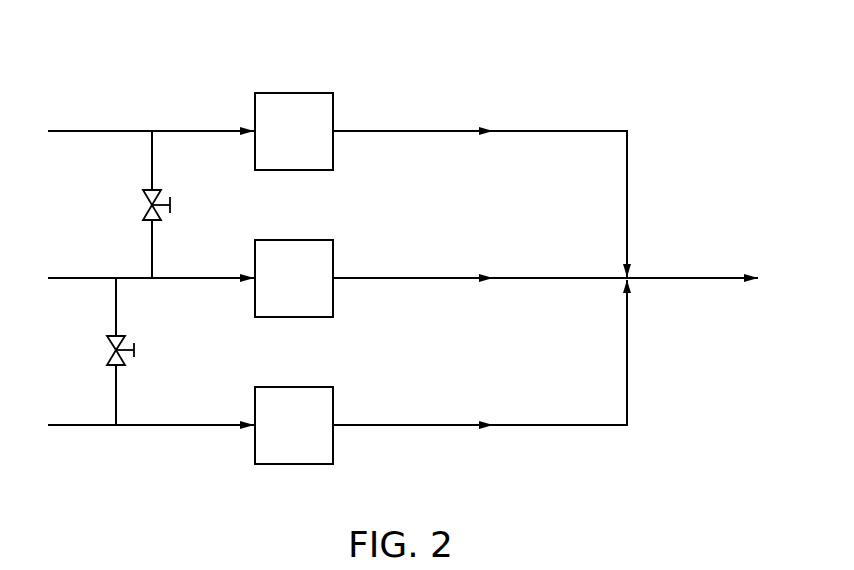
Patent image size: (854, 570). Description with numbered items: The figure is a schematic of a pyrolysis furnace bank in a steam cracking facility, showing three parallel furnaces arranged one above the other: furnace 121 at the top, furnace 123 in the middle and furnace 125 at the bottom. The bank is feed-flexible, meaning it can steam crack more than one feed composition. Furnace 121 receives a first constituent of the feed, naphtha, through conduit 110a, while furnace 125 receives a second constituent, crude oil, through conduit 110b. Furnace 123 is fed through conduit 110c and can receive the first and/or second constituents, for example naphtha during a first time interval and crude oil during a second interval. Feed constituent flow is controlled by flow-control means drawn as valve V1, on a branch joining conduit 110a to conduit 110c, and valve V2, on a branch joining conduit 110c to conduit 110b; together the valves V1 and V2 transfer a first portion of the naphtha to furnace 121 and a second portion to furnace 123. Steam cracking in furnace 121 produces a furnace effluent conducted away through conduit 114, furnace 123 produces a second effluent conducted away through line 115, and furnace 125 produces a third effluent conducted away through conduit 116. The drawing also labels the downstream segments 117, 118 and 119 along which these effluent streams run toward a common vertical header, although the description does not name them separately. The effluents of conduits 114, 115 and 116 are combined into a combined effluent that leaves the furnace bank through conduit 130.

The conduit 110a is at (197, 131).
The conduit 110b is at (191, 425).
The conduit 110c is at (203, 278).
The valve V1 is at (143, 205).
The valve V2 is at (107, 352).
The furnace 121 is at (297, 93).
The furnace 123 is at (297, 240).
The furnace 125 is at (297, 387).
The conduit 114 is at (452, 131).
The line 115 is at (452, 278).
The conduit 116 is at (452, 425).
The first combining line 117 is at (590, 132).
The second combining line 118 is at (590, 279).
The third combining line 119 is at (590, 426).
The conduit 130 is at (714, 278).